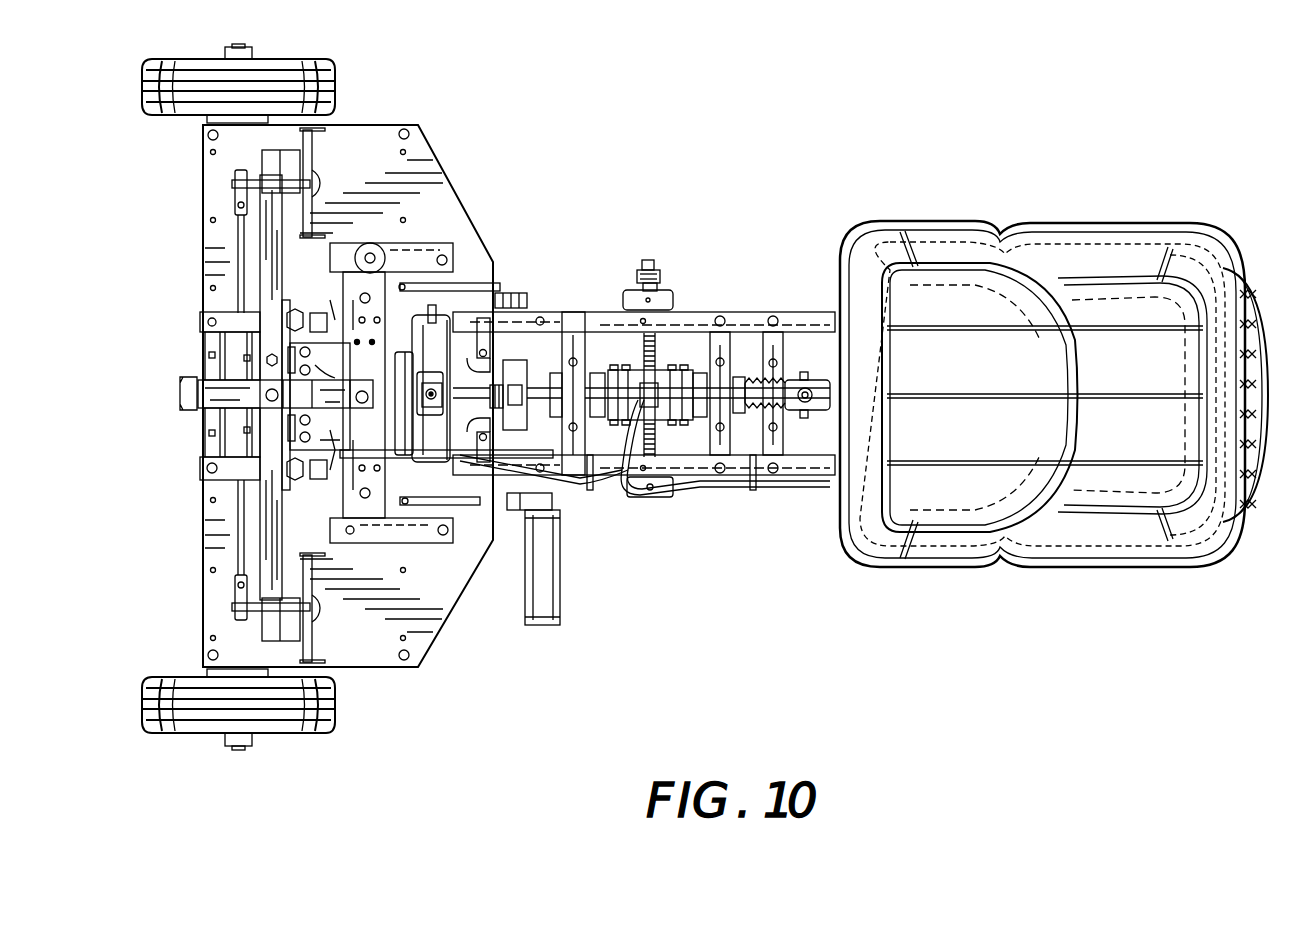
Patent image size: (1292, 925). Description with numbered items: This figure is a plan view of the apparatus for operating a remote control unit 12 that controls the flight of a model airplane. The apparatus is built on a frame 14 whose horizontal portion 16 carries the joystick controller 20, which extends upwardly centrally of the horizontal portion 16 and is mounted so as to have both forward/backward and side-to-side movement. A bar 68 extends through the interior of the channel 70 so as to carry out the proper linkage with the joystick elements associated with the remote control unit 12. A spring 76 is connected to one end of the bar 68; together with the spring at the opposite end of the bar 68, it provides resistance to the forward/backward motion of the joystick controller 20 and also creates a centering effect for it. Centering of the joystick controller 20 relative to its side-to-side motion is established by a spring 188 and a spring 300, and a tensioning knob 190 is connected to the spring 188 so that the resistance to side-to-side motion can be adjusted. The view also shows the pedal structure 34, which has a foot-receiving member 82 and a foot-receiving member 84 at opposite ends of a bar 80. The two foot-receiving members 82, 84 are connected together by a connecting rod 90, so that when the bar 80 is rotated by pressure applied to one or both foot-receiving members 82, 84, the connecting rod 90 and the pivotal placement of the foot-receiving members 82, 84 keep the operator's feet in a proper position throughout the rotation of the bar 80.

The remote control unit 12 is at (440, 317).
The frame 14 is at (807, 470).
The horizontal portion 16 is at (813, 320).
The joystick controller 20 is at (643, 383).
The pedal structure 34 is at (270, 280).
The bar 68 is at (540, 380).
The channel 70 is at (492, 380).
The spring 76 is at (793, 387).
The bar 80 is at (270, 553).
The foot-receiving member 82 is at (307, 163).
The foot-receiving member 84 is at (315, 628).
The connecting rod 90 is at (237, 243).
The spring 188 is at (657, 343).
The tensioning knob 190 is at (655, 262).
The spring 300 is at (657, 430).